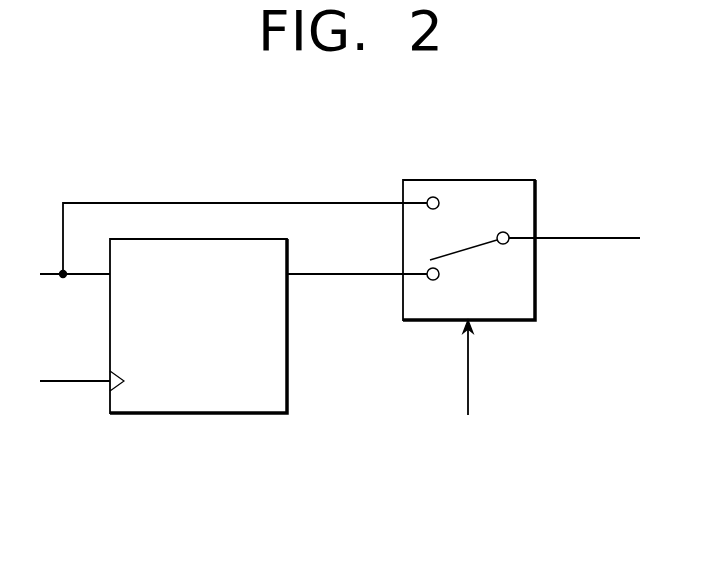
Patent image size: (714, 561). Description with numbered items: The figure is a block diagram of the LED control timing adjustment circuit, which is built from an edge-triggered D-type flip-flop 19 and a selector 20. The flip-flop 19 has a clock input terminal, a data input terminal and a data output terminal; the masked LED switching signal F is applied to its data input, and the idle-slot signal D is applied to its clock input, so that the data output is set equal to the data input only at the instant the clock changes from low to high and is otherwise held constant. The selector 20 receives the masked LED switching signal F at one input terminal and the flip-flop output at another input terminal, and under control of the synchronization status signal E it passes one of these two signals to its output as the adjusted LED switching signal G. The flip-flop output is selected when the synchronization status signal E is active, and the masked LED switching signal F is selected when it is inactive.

The edge-triggered D-type flip-flop 19 is at (227, 414).
The selector 20 is at (465, 178).
The masked LED switching signal F is at (233, 255).
The idle-slot signal D is at (82, 394).
The adjusted LED switching signal G is at (463, 241).
The synchronization status signal E is at (478, 367).